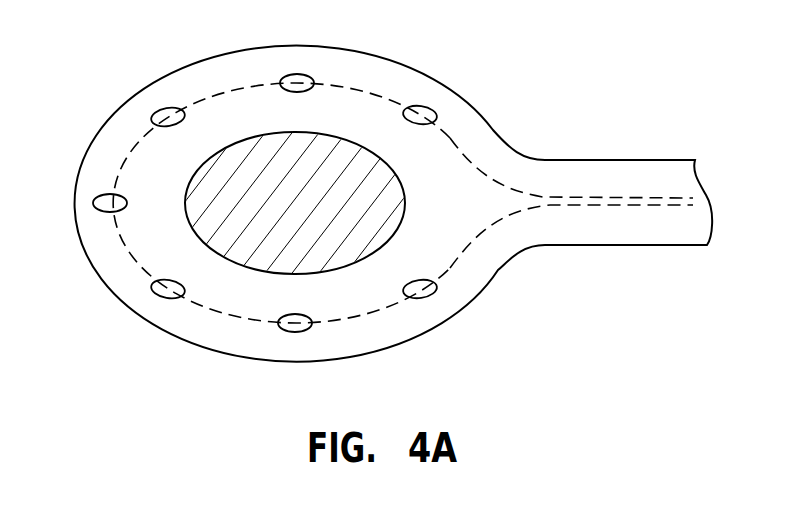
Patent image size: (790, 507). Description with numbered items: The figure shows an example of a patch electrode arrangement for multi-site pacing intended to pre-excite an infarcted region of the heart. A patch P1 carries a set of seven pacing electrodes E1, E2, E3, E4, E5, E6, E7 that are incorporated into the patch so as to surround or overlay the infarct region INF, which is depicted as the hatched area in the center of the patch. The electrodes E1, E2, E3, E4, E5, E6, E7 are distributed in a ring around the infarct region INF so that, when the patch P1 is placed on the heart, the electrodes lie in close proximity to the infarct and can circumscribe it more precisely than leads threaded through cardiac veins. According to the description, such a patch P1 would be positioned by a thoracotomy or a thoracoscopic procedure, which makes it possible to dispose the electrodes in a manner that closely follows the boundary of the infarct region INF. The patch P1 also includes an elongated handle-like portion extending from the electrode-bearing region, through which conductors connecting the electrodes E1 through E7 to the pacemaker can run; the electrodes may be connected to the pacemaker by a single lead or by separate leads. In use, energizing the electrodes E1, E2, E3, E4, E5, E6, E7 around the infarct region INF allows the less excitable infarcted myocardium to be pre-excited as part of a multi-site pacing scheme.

The patch P1 is at (220, 52).
The infarct region INF is at (333, 150).
The electrode E1 is at (425, 114).
The electrode E2 is at (297, 80).
The electrode E3 is at (165, 115).
The electrode E4 is at (106, 202).
The electrode E5 is at (160, 292).
The electrode E6 is at (296, 326).
The electrode E7 is at (425, 291).